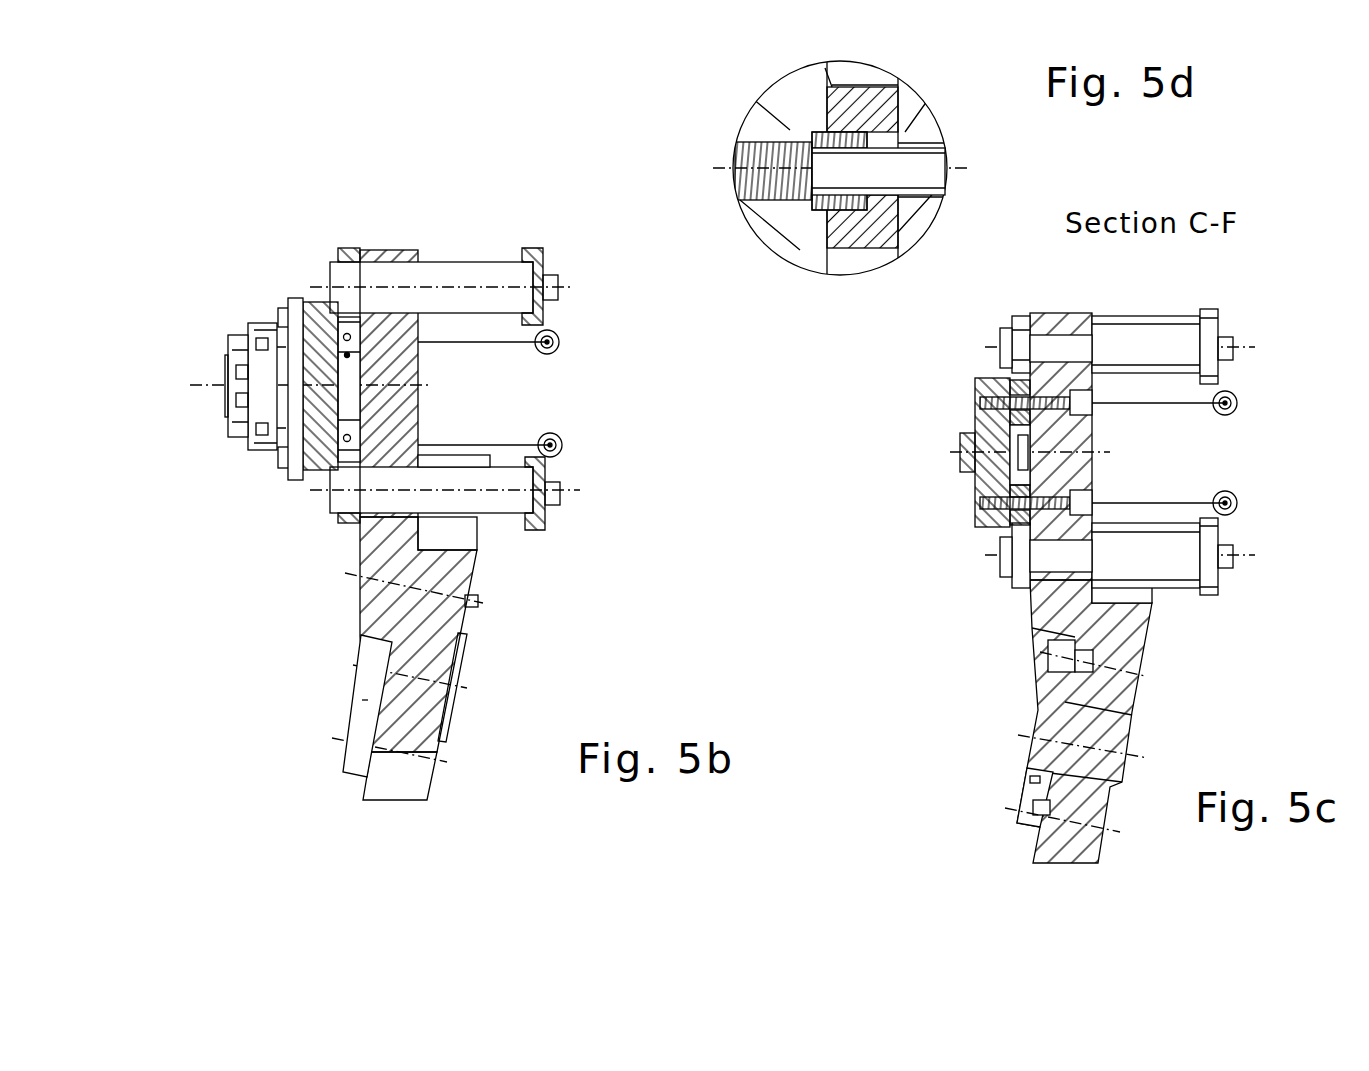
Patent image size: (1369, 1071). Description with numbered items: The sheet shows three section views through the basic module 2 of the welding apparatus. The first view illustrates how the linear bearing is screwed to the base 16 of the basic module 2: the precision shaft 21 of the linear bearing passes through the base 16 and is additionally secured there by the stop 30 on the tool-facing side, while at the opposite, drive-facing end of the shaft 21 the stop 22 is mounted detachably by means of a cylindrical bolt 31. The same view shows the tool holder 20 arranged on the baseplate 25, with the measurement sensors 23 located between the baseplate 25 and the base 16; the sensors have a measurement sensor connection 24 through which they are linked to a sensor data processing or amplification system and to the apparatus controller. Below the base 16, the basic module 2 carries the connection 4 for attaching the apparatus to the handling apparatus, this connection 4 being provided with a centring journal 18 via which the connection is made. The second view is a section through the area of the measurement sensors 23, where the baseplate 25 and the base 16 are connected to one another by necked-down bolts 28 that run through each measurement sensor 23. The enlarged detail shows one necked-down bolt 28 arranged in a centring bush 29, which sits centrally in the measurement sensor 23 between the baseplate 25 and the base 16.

In FIG. 5B, the basic module 2 is at (345, 602).
In FIG. 5C, the basic module 2 is at (1007, 608).
In FIG. 5B, the connection 4 is at (345, 720).
In FIG. 5C, the connection 4 is at (1142, 733).
In FIG. 5B, the base 16 is at (420, 630).
In FIG. 5C, the base 16 is at (1113, 627).
In FIG. 5D, the base 16 is at (918, 125).
In FIG. 5B, the centring journal 18 is at (373, 692).
In FIG. 5C, the centring journal 18 is at (1027, 768).
In FIG. 5B, the tool holder 20 is at (205, 438).
In FIG. 5B, the precision shaft 21 is at (470, 273).
In FIG. 5C, the precision shaft 21 is at (1138, 333).
In FIG. 5B, the stop 22 is at (537, 250).
In FIG. 5C, the stop 22 is at (1220, 318).
In FIG. 5B, the measurement sensor 23 is at (313, 303).
In FIG. 5C, the measurement sensor 23 is at (1003, 532).
In FIG. 5D, the measurement sensor 23 is at (870, 112).
In FIG. 5B, the measurement sensor connection 24 is at (552, 357).
In FIG. 5C, the measurement sensor connection 24 is at (1235, 422).
In FIG. 5B, the baseplate 25 is at (315, 432).
In FIG. 5C, the baseplate 25 is at (997, 470).
In FIG. 5D, the baseplate 25 is at (780, 133).
In FIG. 5D, the necked-down bolt 28 is at (738, 198).
In FIG. 5D, the centring bush 29 is at (818, 208).
In FIG. 5B, the stop 30 is at (338, 250).
In FIG. 5C, the stop 30 is at (1012, 315).
In FIG. 5B, the cylindrical bolt 31 is at (562, 492).